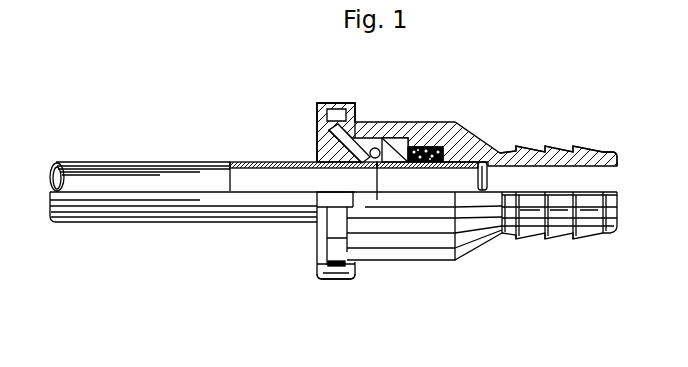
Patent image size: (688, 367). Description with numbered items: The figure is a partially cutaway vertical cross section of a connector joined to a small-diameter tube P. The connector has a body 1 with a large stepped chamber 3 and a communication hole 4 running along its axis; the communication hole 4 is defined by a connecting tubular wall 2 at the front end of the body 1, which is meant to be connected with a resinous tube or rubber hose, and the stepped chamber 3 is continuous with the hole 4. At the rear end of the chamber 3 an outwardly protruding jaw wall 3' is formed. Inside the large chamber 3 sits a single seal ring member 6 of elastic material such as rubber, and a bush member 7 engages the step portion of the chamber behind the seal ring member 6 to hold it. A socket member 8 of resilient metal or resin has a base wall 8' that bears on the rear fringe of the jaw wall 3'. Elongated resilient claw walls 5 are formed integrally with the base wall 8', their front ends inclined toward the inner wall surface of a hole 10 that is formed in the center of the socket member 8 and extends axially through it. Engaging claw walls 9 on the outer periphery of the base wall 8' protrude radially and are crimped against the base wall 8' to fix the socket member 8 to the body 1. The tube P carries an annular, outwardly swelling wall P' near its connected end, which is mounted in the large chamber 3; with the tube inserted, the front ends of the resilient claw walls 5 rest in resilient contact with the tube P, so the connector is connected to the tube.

The body 1 is at (428, 250).
The connecting tubular wall 2 is at (555, 225).
The stepped chamber 3 is at (357, 212).
The jaw wall 3' is at (313, 186).
The communication hole 4 is at (537, 172).
The resilient claw walls 5 is at (368, 155).
The seal ring member 6 is at (435, 148).
The bush member 7 is at (402, 148).
The socket member 8 is at (273, 244).
The base wall 8' is at (306, 263).
The engaging claw walls 9 is at (330, 105).
The hole 10 is at (330, 150).
The tube P is at (213, 165).
The swelling wall P' is at (432, 132).